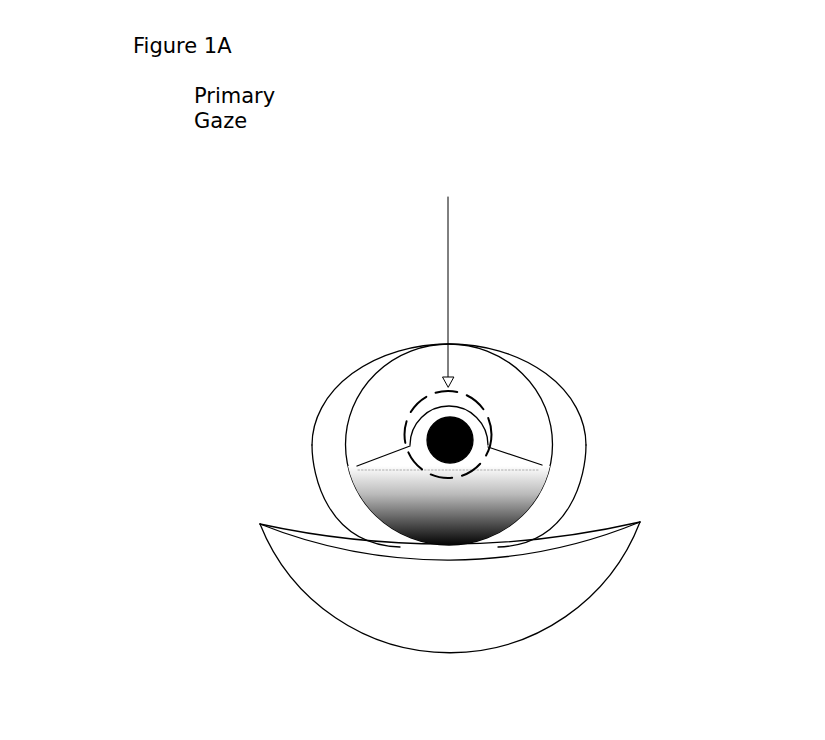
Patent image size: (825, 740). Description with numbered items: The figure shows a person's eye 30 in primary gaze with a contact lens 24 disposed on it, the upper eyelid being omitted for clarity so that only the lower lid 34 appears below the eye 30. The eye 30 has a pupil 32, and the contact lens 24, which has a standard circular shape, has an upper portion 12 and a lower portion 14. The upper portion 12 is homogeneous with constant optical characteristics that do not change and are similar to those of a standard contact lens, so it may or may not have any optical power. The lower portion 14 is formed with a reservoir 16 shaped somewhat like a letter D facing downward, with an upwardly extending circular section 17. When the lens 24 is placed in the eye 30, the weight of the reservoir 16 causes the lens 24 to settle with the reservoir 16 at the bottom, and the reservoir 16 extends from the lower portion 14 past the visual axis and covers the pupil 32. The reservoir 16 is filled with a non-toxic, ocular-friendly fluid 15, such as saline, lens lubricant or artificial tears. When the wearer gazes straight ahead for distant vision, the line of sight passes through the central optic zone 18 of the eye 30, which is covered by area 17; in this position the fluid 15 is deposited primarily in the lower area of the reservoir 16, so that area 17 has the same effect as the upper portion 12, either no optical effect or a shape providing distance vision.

The upper portion 12 is at (496, 372).
The lower portion 14 is at (537, 496).
The fluid 15 is at (512, 472).
The reservoir 16 is at (390, 485).
The circular section 17 is at (490, 432).
The central optic zone 18 is at (448, 278).
The contact lens 24 is at (547, 395).
The eye 30 is at (318, 491).
The pupil 32 is at (422, 427).
The lower lid 34 is at (450, 587).